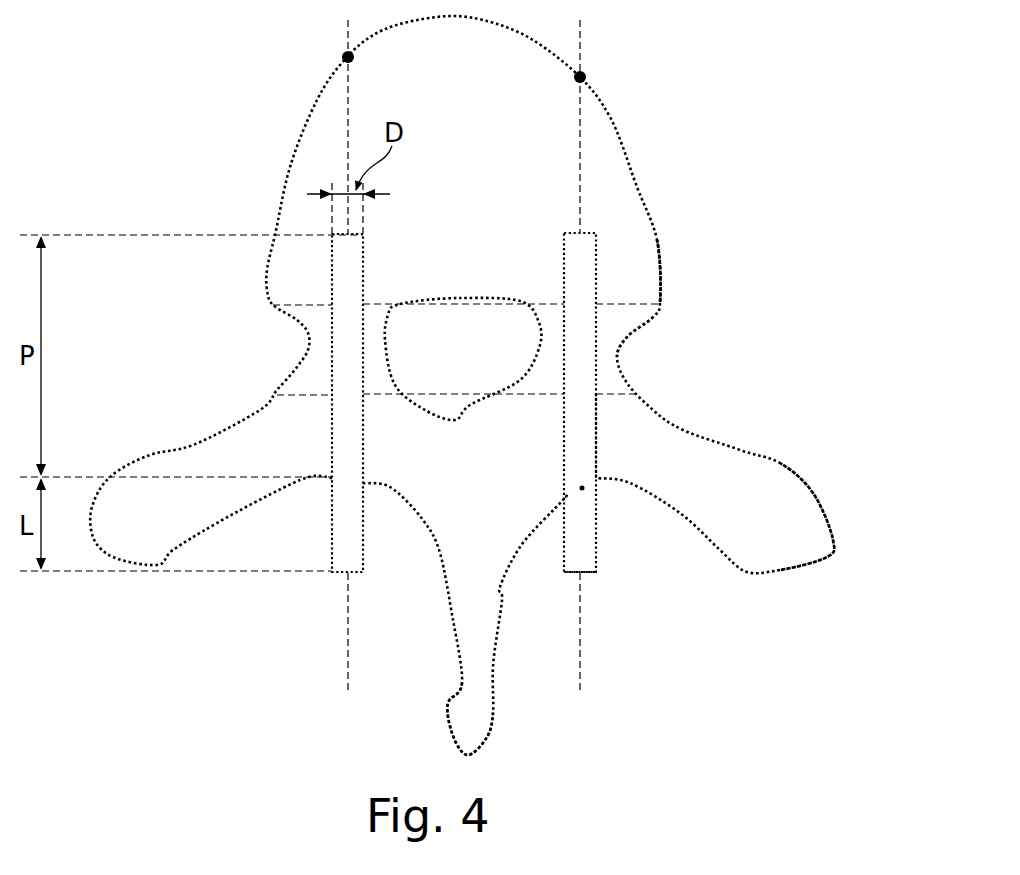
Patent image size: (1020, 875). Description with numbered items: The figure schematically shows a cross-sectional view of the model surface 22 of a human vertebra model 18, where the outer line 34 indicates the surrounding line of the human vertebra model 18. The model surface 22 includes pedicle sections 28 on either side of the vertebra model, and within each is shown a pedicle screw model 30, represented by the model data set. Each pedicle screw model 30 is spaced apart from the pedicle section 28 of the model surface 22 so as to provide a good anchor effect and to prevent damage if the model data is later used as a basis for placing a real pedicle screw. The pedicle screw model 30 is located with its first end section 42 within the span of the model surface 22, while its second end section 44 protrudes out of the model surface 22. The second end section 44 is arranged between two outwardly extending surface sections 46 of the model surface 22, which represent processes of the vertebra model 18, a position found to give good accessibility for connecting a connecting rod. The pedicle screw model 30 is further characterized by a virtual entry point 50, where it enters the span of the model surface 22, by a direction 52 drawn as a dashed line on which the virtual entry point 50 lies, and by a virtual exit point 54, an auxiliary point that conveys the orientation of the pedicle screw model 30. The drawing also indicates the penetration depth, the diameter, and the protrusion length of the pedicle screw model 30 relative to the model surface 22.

The human vertebra model 18 is at (688, 143).
The model surface 22 is at (668, 288).
The pedicle section 28 is at (638, 318).
The pedicle screw model 30 is at (583, 262).
The outer line 34 is at (668, 288).
The first end section 42 is at (604, 430).
The second end section 44 is at (601, 554).
The outwardly extending surface sections 46 is at (823, 498).
The virtual entry point 50 is at (591, 490).
The direction 52 is at (586, 150).
The virtual exit point 54 is at (589, 64).